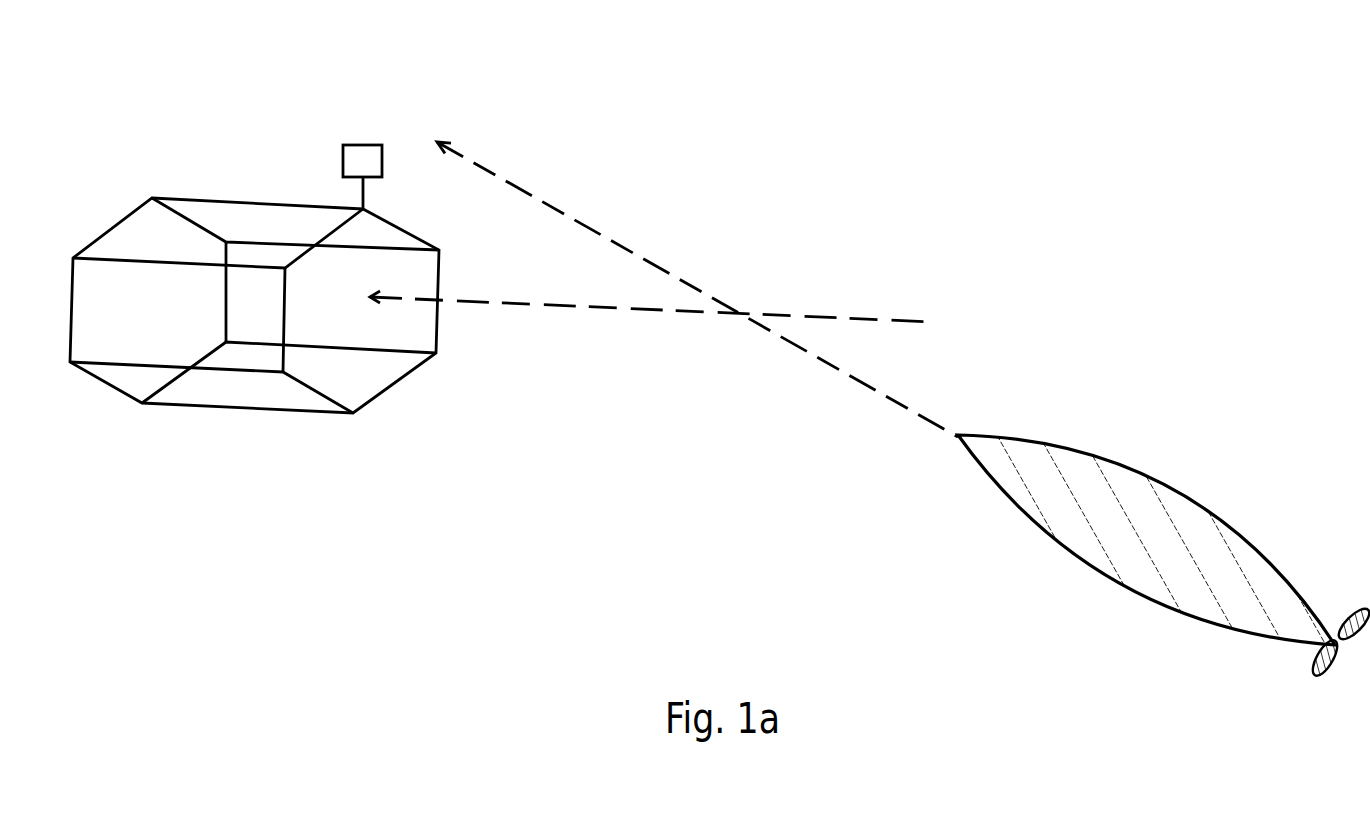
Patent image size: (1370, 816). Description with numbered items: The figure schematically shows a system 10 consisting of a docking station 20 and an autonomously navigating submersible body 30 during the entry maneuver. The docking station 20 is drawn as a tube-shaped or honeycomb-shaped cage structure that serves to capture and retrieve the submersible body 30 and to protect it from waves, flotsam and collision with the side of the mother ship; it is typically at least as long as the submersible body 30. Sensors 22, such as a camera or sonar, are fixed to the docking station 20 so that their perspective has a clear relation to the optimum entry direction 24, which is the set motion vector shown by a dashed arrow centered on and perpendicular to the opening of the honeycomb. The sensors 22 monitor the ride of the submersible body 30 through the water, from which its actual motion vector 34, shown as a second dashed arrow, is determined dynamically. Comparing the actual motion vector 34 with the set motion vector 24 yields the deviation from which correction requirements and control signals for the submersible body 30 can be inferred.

The system 10 is at (1236, 77).
The docking station 20 is at (216, 198).
The sensors 22 is at (365, 145).
The optimum entry direction 24 is at (883, 318).
The autonomously navigating submersible body 30 is at (1173, 488).
The actual motion vector 34 is at (640, 252).